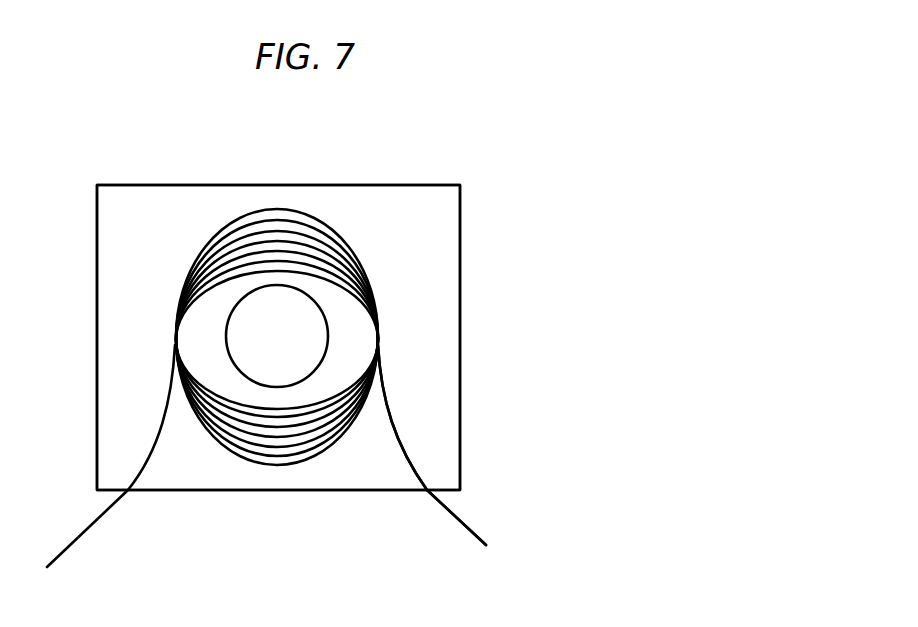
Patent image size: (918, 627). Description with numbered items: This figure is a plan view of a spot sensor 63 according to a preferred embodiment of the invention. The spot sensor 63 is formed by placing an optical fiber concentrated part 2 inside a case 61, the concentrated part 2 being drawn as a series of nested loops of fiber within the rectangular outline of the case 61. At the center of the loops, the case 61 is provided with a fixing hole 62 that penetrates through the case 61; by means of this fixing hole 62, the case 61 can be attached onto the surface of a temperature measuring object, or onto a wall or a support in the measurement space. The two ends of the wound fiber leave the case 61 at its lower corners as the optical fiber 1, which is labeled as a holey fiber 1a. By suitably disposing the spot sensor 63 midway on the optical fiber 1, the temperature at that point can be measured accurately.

The optical fiber 1 is at (455, 513).
The holey fiber 1a is at (467, 527).
The optical fiber concentrated part 2 is at (258, 207).
The case 61 is at (460, 365).
The fixing hole 62 is at (320, 308).
The spot sensor 63 is at (460, 171).